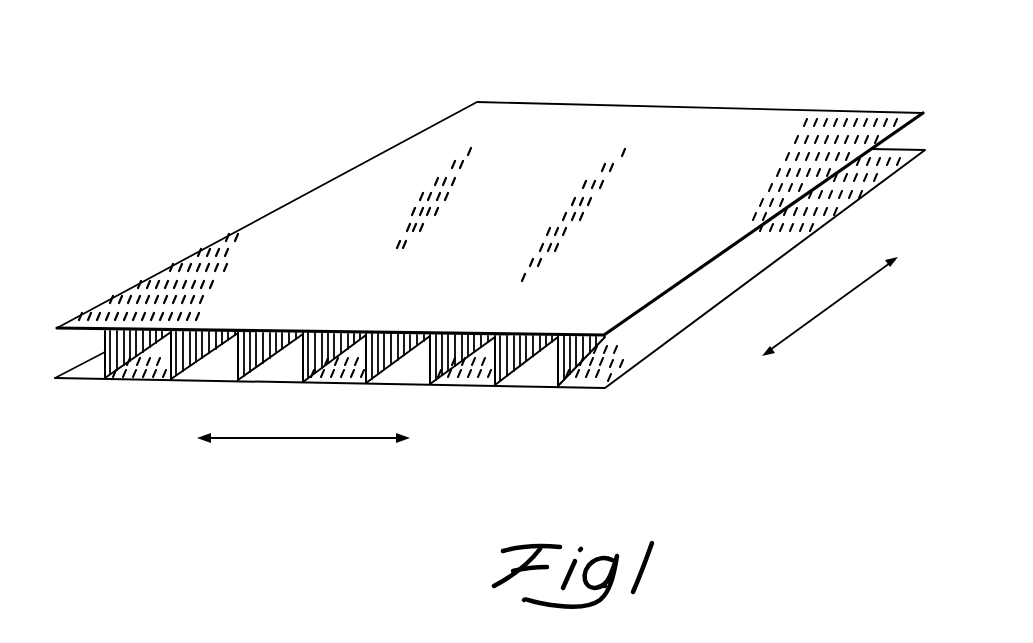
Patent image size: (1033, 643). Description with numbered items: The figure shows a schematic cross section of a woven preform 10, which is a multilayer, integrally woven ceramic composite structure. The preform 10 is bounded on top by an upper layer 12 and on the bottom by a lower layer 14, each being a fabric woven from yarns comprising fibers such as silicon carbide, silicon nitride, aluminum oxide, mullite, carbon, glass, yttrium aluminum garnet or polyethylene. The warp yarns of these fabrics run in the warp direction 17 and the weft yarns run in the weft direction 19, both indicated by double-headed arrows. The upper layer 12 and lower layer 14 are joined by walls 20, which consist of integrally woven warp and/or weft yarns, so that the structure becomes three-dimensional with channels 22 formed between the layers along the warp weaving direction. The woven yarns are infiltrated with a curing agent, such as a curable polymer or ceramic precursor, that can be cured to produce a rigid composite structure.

The woven preform 10 is at (304, 177).
The upper layer 12 is at (688, 106).
The lower layer 14 is at (635, 367).
The warp direction 17 is at (840, 297).
The weft direction 19 is at (253, 440).
The walls 20 is at (100, 350).
The channels 22 is at (440, 380).